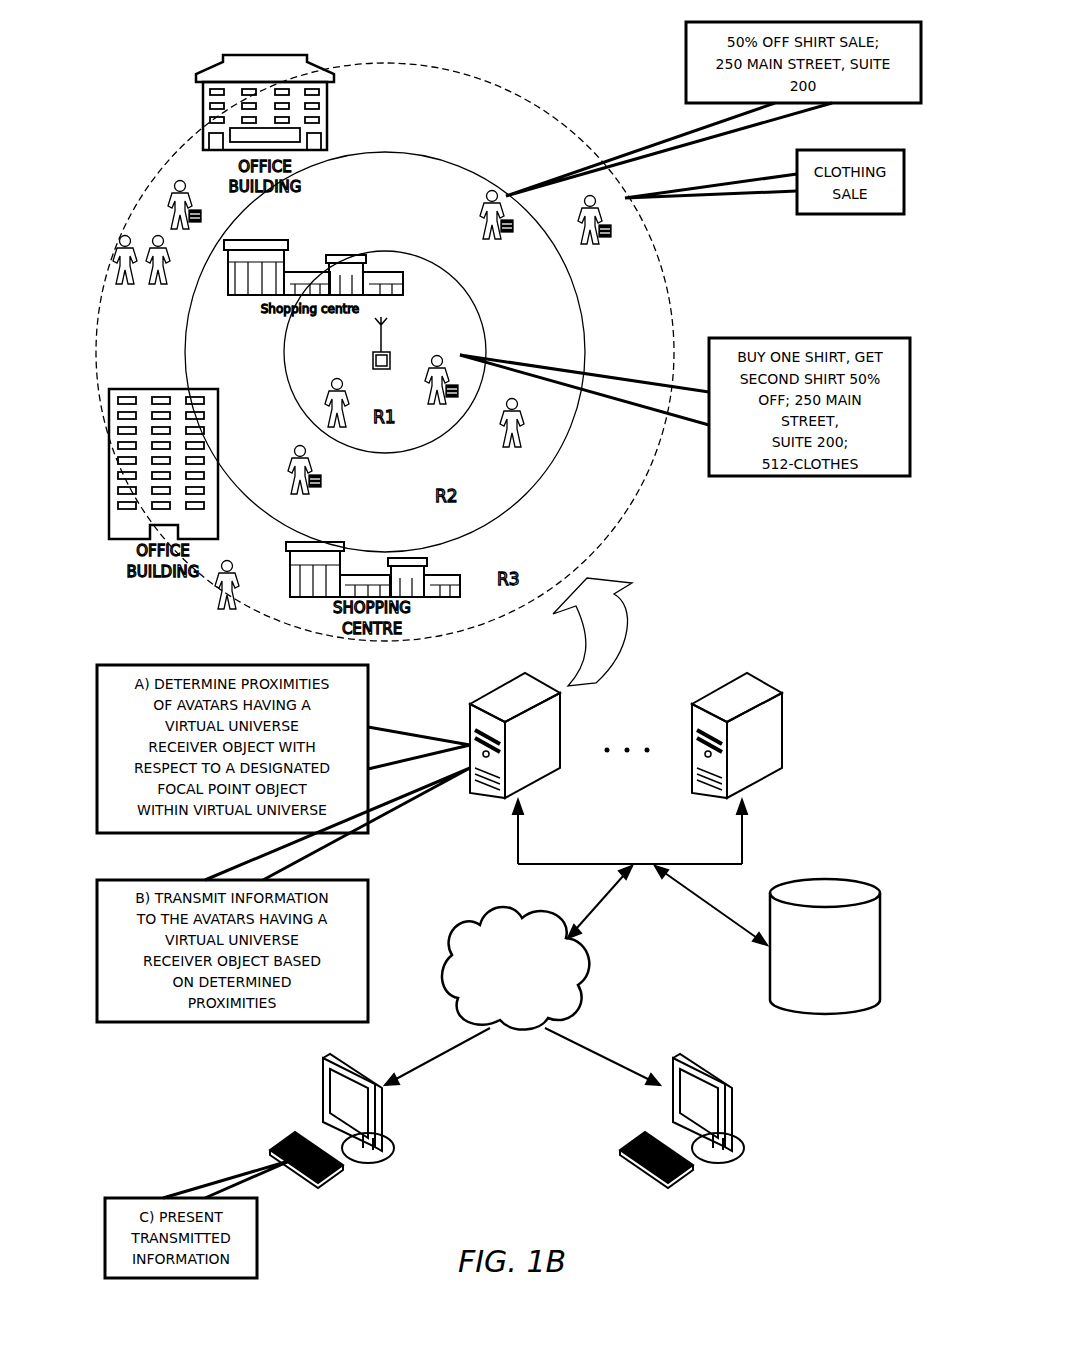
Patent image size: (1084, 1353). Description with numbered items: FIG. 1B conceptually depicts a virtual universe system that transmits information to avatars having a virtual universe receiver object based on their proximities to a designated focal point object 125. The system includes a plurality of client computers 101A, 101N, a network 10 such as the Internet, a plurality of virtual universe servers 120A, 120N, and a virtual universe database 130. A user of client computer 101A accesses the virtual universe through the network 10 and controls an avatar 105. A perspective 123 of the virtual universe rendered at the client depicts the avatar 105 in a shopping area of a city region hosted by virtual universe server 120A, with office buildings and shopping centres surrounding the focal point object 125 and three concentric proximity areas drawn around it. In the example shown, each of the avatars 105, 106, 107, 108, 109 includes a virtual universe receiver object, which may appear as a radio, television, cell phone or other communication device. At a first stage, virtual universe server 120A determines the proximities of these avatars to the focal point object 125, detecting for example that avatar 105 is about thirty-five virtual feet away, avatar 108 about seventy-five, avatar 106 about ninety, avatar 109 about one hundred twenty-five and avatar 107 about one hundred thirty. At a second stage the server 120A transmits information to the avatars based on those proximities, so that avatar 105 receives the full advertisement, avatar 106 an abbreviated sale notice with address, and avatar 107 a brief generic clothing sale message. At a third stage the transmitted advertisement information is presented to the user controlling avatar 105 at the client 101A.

The network 10 is at (436, 972).
The client computer 101A is at (320, 1070).
The client computer 101N is at (745, 1085).
The avatar 105 is at (437, 356).
The avatar 106 is at (482, 195).
The avatar 107 is at (614, 228).
The avatar 108 is at (292, 449).
The avatar 109 is at (170, 186).
The virtual universe server 120A is at (478, 692).
The virtual universe server 120N is at (784, 680).
The perspective 123 is at (603, 572).
The designated focal point object 125 is at (380, 352).
The virtual universe database 130 is at (854, 875).